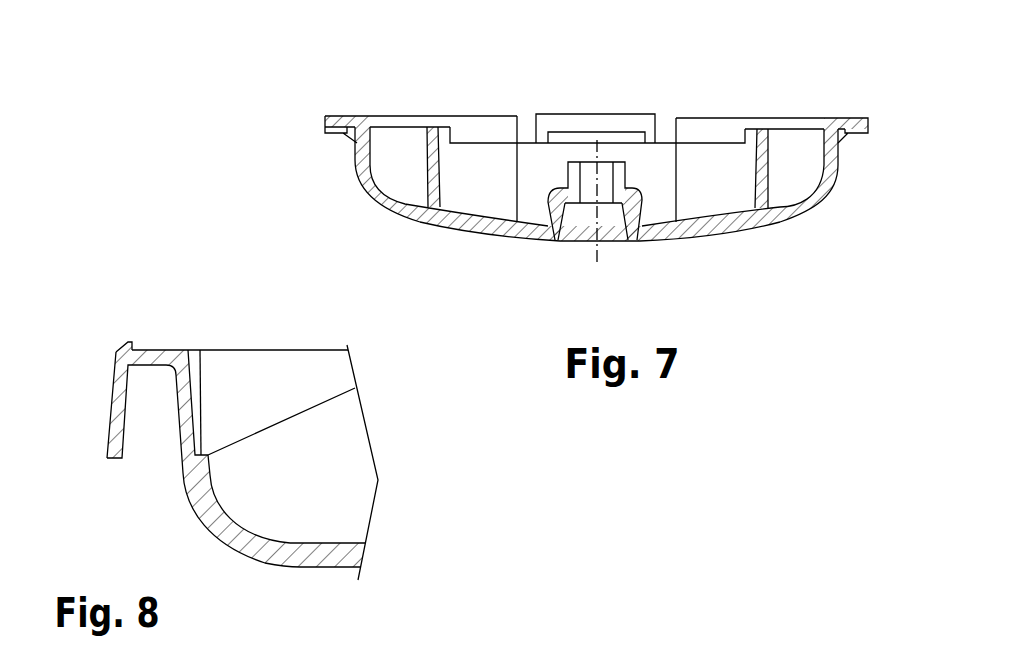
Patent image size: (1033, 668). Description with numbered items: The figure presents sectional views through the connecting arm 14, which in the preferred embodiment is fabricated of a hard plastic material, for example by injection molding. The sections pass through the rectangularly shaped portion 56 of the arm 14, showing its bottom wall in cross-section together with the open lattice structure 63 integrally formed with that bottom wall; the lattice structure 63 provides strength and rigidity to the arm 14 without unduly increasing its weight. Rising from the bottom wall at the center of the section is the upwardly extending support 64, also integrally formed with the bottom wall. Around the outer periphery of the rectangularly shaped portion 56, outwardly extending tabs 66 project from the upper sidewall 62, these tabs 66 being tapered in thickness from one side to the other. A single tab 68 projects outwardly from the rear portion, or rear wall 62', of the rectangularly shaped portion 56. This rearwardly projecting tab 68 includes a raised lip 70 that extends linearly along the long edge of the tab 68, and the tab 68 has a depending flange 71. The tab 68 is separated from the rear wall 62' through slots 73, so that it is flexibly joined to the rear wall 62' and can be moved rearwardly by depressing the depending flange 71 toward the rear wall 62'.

In FIG. 7, the connecting arm 14 is at (815, 113).
In FIG. 7, the rectangularly shaped portion 56 is at (753, 215).
In FIG. 8, the rectangularly shaped portion 56 is at (288, 567).
In FIG. 7, the upper sidewall 62 is at (616, 187).
In FIG. 8, the upper sidewall 62 is at (277, 395).
In FIG. 7, the rear wall 62' is at (560, 91).
In FIG. 8, the rear wall 62' is at (236, 454).
In FIG. 7, the lattice structure 63 is at (425, 172).
In FIG. 8, the lattice structure 63 is at (318, 470).
In FIG. 7, the upwardly extending support 64 is at (628, 240).
In FIG. 7, the tabs 66 is at (330, 117).
In FIG. 7, the tab 68 is at (642, 125).
In FIG. 8, the tab 68 is at (193, 383).
In FIG. 7, the raised lip 70 is at (610, 112).
In FIG. 8, the raised lip 70 is at (128, 343).
In FIG. 8, the depending flange 71 is at (118, 422).
In FIG. 7, the slots 73 is at (513, 127).
In FIG. 8, the slots 73 is at (197, 357).